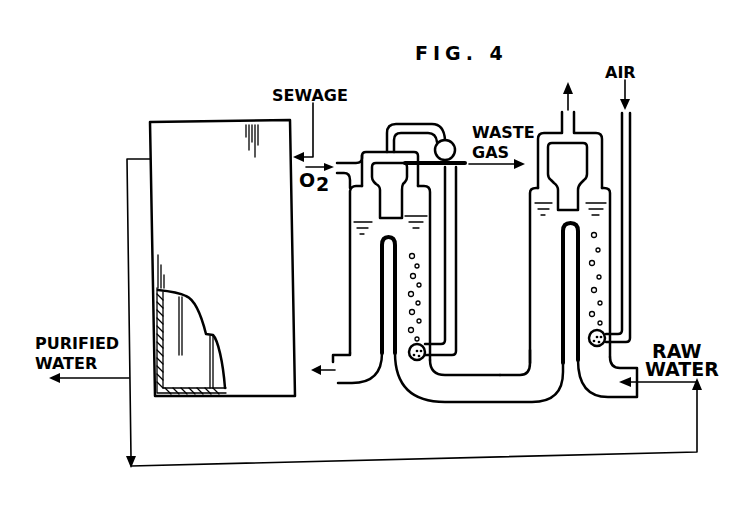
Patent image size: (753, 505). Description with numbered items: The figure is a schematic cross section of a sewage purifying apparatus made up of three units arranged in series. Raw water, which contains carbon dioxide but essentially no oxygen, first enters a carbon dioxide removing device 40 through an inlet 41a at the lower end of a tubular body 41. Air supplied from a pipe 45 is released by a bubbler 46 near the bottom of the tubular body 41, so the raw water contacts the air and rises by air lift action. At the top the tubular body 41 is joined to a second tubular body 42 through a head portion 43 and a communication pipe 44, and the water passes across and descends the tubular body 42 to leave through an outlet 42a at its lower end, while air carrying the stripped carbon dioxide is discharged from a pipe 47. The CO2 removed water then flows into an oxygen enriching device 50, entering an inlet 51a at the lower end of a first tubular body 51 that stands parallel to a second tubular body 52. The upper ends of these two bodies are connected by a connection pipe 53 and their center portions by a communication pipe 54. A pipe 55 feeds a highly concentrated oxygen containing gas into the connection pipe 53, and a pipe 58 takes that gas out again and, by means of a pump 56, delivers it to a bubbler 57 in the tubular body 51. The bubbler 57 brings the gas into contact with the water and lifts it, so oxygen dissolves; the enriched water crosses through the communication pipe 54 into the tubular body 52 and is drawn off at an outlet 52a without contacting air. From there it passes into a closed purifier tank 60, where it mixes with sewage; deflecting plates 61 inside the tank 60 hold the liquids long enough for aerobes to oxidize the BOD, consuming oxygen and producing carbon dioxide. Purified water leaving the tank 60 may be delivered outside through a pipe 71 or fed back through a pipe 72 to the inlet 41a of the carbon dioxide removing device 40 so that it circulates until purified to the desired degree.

The carbon dioxide removing device 40 is at (553, 122).
The tubular body 41 is at (580, 287).
The inlet 41a is at (624, 392).
The tubular body 42 is at (535, 258).
The outlet 42a is at (530, 369).
The head of second reactor 43 is at (602, 146).
The communication pipe 44 is at (565, 189).
The pipe 45 is at (626, 195).
The bubbler 46 is at (595, 348).
The pipe 47 is at (575, 122).
The oxygen enriching device 50 is at (421, 113).
The first tubular body 51 is at (401, 301).
The inlet 51a is at (442, 398).
The second tubular body 52 is at (350, 262).
The outlet 52a is at (340, 383).
The connection pipe 53 is at (374, 151).
The communication pipe 54 is at (383, 205).
The pipe 55 is at (351, 161).
The pump 56 is at (455, 137).
The bubbler 57 is at (407, 360).
The pipe 58 is at (455, 245).
The purifier tank 60 is at (217, 124).
The deflecting plates 61 is at (191, 339).
The pipe 71 is at (128, 236).
The pipe 72 is at (272, 463).